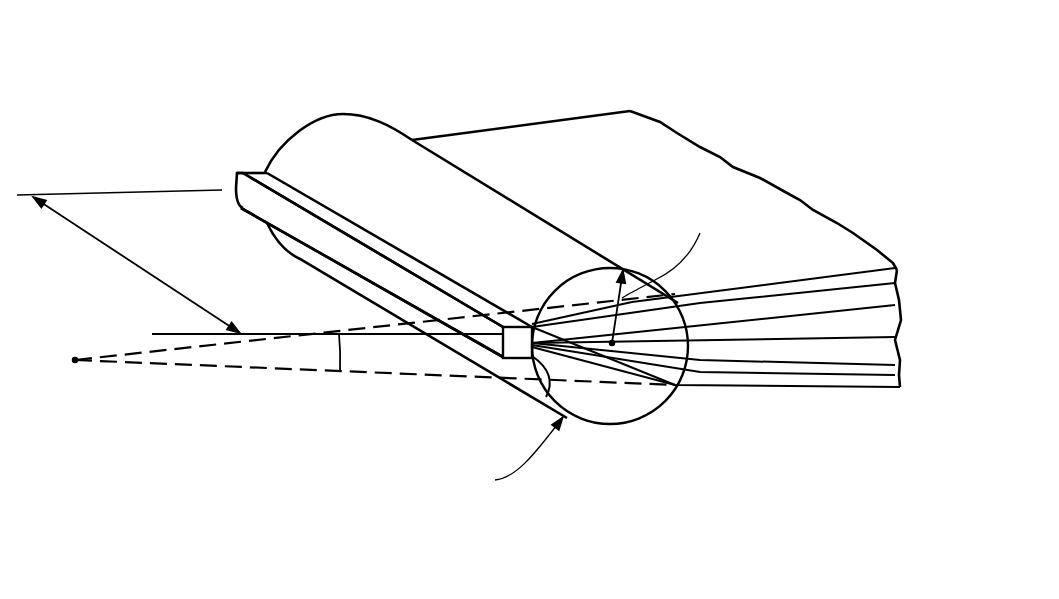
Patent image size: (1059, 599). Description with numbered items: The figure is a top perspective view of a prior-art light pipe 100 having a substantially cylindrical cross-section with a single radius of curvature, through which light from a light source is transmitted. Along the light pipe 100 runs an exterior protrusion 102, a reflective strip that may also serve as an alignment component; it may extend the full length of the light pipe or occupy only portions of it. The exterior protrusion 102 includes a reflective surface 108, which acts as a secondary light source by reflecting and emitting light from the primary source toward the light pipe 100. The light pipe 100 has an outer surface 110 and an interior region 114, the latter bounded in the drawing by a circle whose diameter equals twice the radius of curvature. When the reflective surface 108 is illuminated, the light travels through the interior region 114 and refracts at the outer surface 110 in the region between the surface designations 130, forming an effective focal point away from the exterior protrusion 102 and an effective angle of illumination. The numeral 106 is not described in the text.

The light pipe 100 is at (459, 300).
The exterior protrusion 102 is at (277, 207).
The side surface of optical fiber 106 is at (500, 322).
The reflective surface 108 is at (546, 397).
The outer surface 110 is at (533, 238).
The interior region 114 is at (625, 392).
The surface designations 130 is at (660, 305).